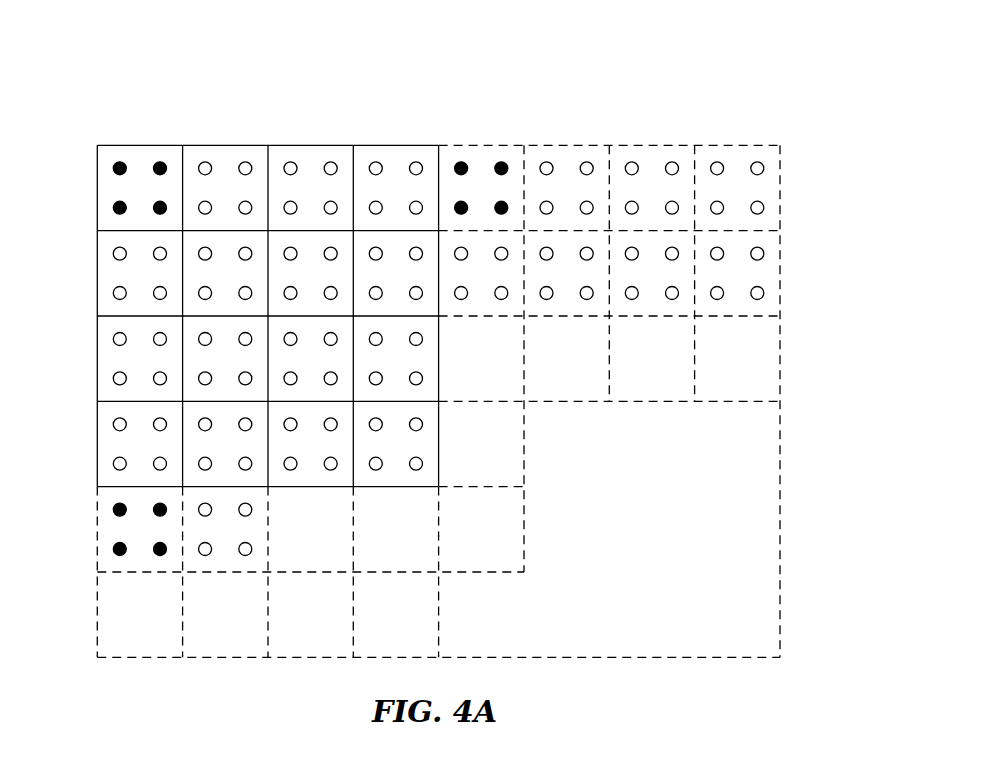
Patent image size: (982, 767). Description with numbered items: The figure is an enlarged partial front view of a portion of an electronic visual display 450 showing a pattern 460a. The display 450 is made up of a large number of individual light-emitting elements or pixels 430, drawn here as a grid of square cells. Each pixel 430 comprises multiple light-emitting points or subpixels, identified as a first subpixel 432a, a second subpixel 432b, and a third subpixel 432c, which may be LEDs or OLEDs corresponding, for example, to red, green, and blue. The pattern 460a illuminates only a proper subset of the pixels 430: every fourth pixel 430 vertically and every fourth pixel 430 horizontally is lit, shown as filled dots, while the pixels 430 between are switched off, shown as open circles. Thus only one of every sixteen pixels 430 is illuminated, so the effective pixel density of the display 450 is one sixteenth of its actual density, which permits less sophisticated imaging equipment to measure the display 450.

The pixel 430 is at (184, 158).
The first subpixel 432a is at (119, 161).
The second subpixel 432b is at (113, 208).
The third subpixel 432c is at (161, 161).
The electronic visual display 450 is at (782, 358).
The pattern 460a is at (683, 100).